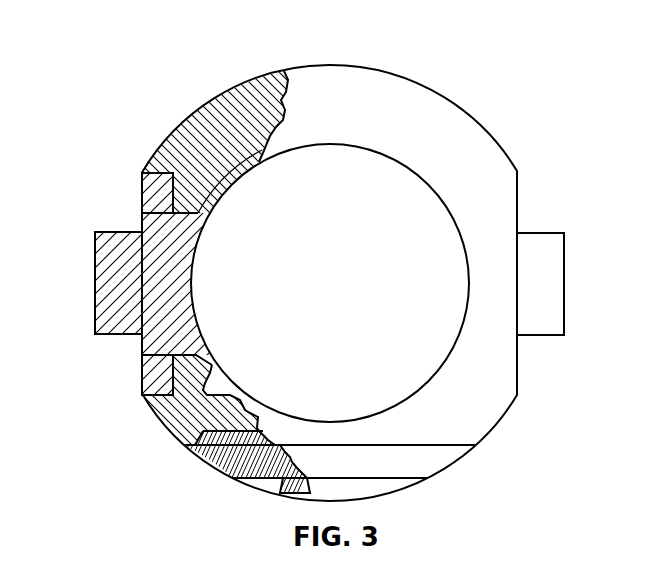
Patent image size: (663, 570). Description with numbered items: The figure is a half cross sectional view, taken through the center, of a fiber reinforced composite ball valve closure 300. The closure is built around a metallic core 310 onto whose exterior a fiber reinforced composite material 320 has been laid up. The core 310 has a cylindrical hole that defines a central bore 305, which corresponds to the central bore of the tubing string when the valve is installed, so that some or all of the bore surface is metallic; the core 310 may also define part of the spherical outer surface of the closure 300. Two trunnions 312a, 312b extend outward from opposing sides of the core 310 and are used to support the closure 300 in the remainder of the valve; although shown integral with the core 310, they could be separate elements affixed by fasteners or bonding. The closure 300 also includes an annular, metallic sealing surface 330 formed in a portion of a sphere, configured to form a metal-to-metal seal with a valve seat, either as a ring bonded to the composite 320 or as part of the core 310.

The fiber reinforced composite ball valve closure 300 is at (183, 57).
The central bore 305 is at (351, 294).
The metallic core 310 is at (222, 178).
The trunnion 312a is at (110, 282).
The trunnion 312b is at (558, 300).
The fiber reinforced composite material 320 is at (266, 78).
The annular metallic sealing surface 330 is at (218, 463).